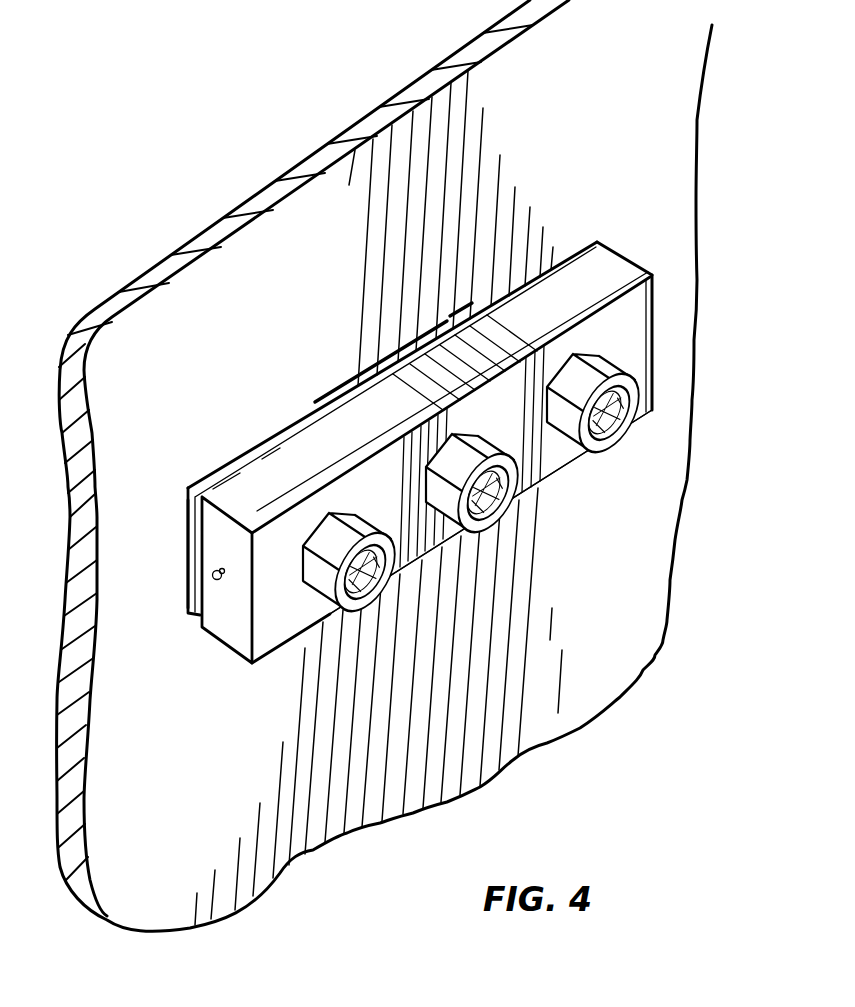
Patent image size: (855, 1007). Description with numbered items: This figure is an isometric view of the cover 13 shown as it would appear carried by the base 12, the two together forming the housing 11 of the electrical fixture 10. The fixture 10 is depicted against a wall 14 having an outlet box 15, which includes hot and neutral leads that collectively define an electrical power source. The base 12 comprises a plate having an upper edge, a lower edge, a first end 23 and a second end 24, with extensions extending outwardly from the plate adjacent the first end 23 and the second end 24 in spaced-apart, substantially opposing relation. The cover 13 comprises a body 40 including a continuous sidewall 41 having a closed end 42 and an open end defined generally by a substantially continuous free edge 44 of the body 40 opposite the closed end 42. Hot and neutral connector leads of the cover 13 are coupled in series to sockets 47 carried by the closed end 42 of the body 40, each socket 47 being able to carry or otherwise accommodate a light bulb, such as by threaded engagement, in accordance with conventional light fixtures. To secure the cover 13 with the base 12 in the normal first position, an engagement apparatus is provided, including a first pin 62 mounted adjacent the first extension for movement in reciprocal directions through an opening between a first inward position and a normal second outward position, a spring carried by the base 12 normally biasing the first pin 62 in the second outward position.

The electrical fixture 10 is at (440, 415).
The housing 11 is at (632, 250).
The base 12 is at (569, 245).
The cover 13 is at (477, 514).
The wall 14 is at (192, 302).
The outlet box 15 is at (390, 358).
The first end 23 is at (188, 556).
The second end 24 is at (588, 243).
The body 40 is at (553, 479).
The continuous sidewall 41 is at (397, 381).
The closed end 42 is at (618, 345).
The free edge 44 is at (252, 458).
The sockets 47 is at (343, 530).
The first pin 62 is at (216, 582).